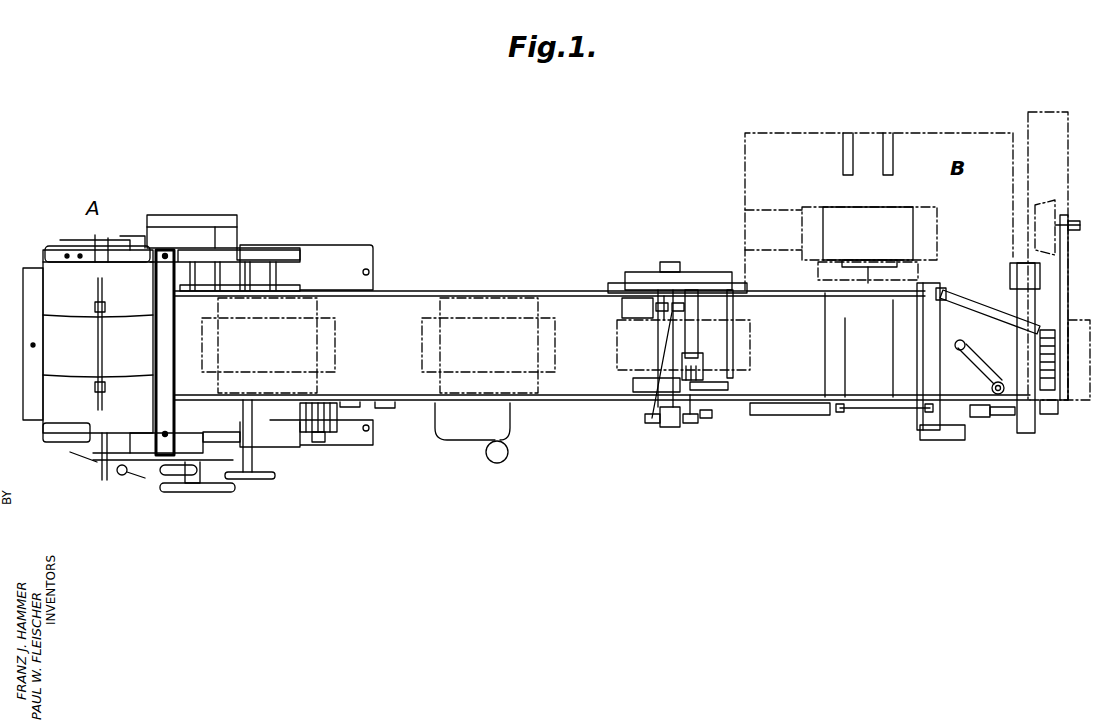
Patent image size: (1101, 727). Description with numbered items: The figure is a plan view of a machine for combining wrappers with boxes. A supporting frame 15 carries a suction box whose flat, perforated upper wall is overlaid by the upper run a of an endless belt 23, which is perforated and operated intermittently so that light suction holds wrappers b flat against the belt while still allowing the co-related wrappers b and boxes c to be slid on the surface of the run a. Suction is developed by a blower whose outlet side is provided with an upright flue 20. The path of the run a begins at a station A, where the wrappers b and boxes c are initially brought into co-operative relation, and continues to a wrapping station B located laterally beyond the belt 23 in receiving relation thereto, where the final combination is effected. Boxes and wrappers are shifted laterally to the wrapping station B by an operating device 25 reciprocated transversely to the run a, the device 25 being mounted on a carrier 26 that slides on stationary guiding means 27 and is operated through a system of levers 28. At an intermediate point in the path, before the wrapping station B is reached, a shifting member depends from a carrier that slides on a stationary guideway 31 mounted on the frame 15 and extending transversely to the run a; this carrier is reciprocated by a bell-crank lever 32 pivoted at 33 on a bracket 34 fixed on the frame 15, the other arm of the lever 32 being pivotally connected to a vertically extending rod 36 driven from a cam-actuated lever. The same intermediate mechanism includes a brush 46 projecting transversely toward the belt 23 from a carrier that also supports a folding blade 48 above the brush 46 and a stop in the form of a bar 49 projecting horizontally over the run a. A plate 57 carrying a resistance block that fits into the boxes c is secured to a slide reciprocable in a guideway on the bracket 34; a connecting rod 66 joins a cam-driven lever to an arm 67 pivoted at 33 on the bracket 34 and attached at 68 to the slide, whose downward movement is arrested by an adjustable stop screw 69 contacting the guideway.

The station A is at (198, 353).
The wrapping station B is at (917, 276).
The upper run a is at (435, 305).
The wrapper b is at (416, 344).
The box c is at (445, 340).
The supporting frame 15 is at (591, 406).
The upright flue 20 is at (509, 452).
The endless belt 23 is at (402, 397).
The operating device 25 is at (888, 260).
The carrier 26 is at (918, 300).
The stationary guiding means 27 is at (893, 358).
The system of levers 28 is at (960, 346).
The stationary guideway 31 is at (699, 340).
The bell-crank lever 32 is at (712, 416).
The pivot 33 is at (633, 384).
The bracket 34 is at (700, 358).
The vertically extending rod 36 is at (690, 425).
The brush 46 is at (727, 284).
The folding blade 48 is at (706, 278).
The stop bar 49 is at (750, 341).
The plate 57 is at (622, 308).
The connecting rod 66 is at (655, 425).
The arm 67 is at (658, 350).
The pivotal attachment 68 is at (660, 316).
The adjustable stop screw 69 is at (684, 307).